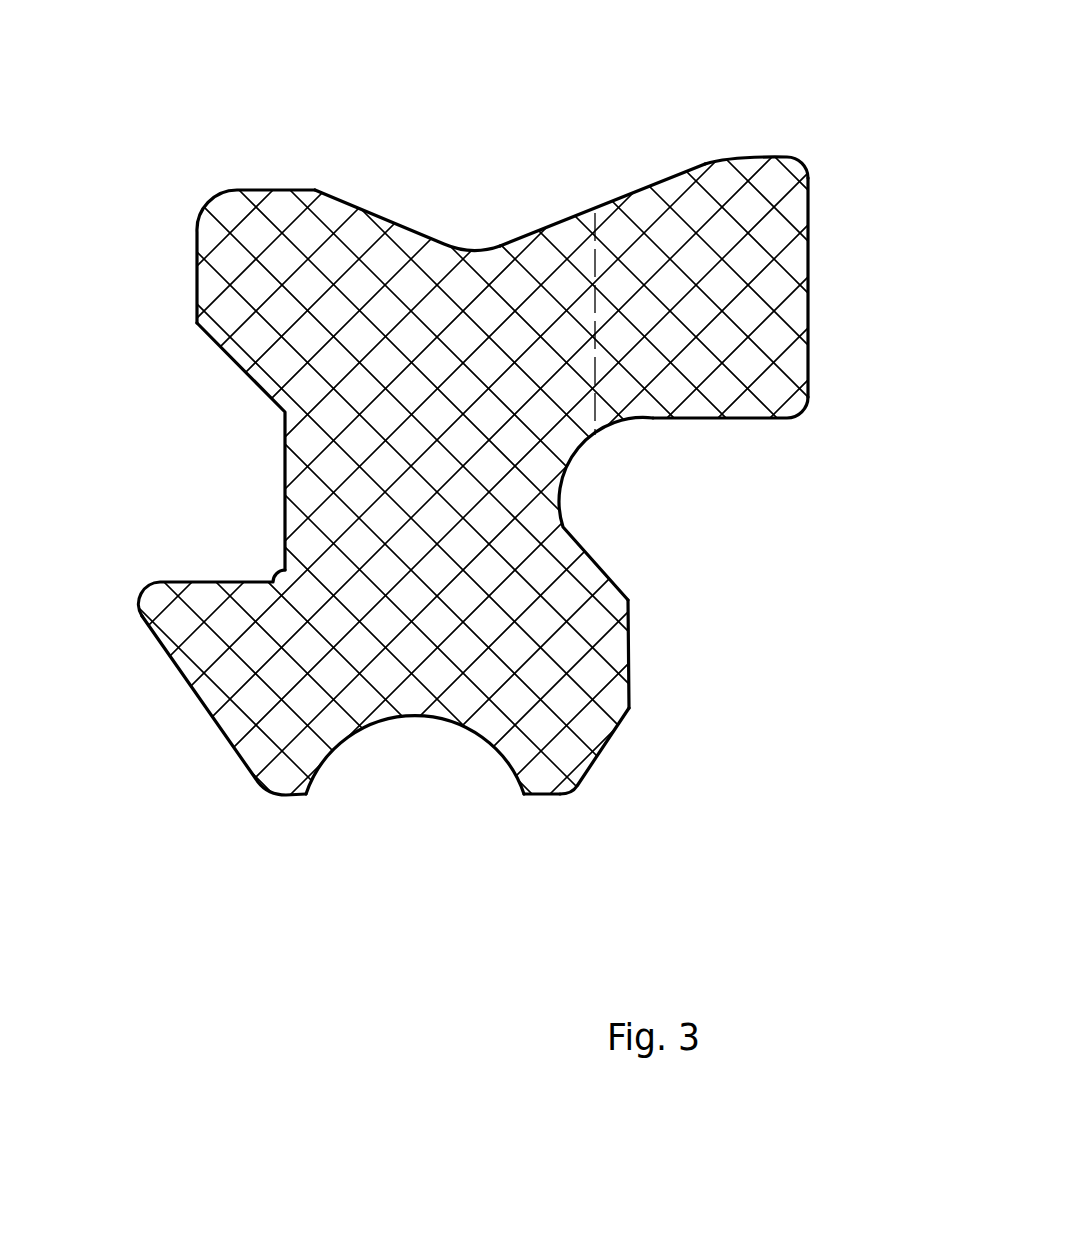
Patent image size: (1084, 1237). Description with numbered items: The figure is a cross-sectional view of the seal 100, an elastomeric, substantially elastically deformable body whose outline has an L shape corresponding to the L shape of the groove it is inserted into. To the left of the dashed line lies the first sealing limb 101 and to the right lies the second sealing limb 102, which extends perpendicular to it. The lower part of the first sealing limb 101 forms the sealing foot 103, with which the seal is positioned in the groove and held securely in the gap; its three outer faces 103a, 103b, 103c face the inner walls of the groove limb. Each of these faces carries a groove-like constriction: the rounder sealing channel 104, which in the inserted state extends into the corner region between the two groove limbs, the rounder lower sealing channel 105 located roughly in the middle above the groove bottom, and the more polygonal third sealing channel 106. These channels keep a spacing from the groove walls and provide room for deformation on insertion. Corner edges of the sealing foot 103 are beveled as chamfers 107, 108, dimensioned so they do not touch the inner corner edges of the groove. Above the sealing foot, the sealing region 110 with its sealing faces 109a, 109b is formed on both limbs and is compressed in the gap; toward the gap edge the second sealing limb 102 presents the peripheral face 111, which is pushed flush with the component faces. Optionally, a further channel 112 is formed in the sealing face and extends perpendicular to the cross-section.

The seal 100 is at (501, 477).
The first sealing limb 101 is at (370, 495).
The second sealing limb 102 is at (787, 212).
The sealing foot 103 is at (444, 715).
The outer face of the sealing foot 103a is at (649, 639).
The outer face of the sealing foot 103b is at (546, 814).
The outer face of the sealing foot 103c is at (127, 577).
The sealing channel 104 is at (579, 505).
The lower sealing channel 105 is at (418, 736).
The third sealing channel 106 is at (267, 430).
The chamfer 107 is at (613, 733).
The chamfer 108 is at (171, 690).
The sealing face 109a is at (279, 171).
The sealing face 109b is at (764, 139).
The sealing region 110 is at (513, 270).
The peripheral face 111 is at (826, 281).
The further channel 112 is at (460, 233).